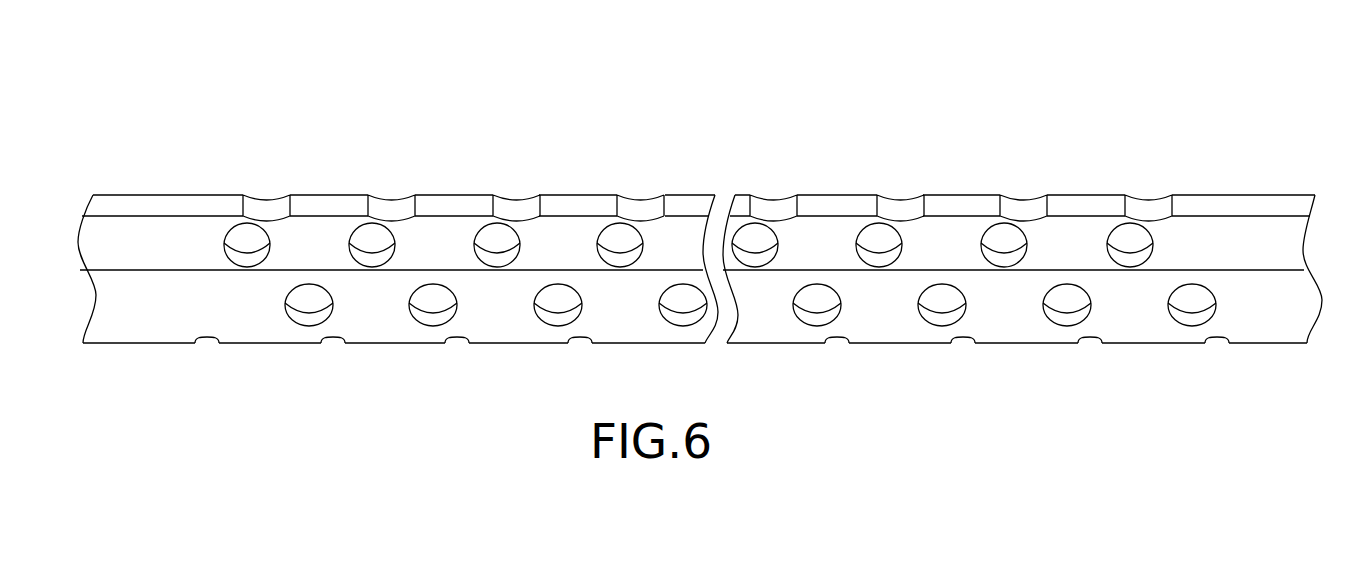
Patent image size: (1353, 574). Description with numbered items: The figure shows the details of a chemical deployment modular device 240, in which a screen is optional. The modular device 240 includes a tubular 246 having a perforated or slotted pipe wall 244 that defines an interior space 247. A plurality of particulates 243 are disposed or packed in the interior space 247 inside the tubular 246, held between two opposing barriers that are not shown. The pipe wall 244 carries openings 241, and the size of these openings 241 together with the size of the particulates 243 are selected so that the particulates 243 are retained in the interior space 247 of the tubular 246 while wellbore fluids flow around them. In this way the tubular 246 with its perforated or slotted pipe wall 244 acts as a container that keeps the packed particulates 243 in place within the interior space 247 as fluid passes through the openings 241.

The modular device 240 is at (294, 123).
The openings 241 is at (752, 240).
The particulates 243 is at (178, 240).
The pipe wall 244 is at (442, 207).
The tubular 246 is at (1292, 195).
The interior space 247 is at (677, 227).